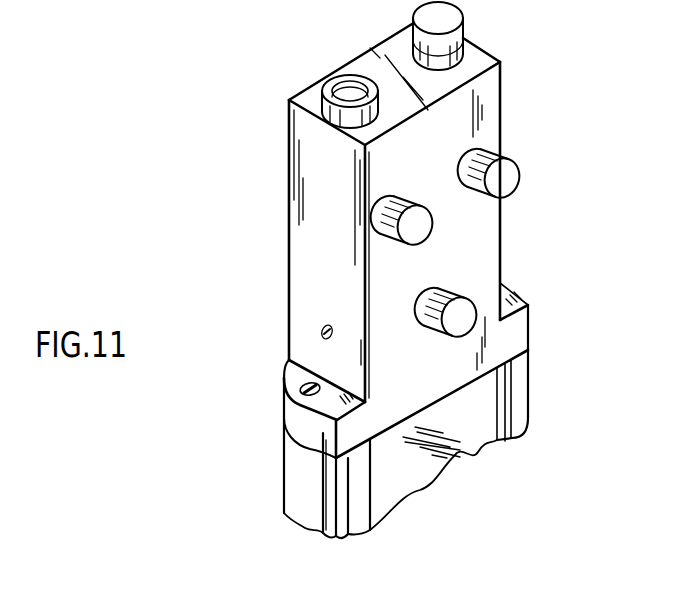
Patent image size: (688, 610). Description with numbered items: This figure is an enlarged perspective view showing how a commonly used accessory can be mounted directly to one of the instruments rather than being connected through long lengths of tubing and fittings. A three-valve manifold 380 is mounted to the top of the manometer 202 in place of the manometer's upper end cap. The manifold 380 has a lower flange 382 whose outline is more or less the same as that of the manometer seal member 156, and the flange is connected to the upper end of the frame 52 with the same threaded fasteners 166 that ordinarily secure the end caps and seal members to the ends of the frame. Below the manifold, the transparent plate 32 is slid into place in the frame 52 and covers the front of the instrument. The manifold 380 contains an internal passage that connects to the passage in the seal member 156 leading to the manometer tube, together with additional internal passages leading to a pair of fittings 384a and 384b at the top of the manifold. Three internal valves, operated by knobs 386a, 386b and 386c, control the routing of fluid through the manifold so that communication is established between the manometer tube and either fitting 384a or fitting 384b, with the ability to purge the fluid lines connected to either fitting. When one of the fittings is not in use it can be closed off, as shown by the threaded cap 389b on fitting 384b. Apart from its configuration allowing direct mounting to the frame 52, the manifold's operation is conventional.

The three-valve manifold 380 is at (272, 258).
The fitting 384a is at (348, 82).
The fitting 384b is at (501, 64).
The threaded cap 389b is at (545, 36).
The knob 386a is at (485, 261).
The knob 386b is at (585, 171).
The knob 386c is at (465, 310).
The lower flange 382 is at (290, 373).
The threaded fasteners 166 is at (320, 390).
The seal member 156 is at (288, 423).
The frame 52 is at (283, 452).
The transparent plate 32 is at (470, 452).
The manometer 202 is at (246, 485).